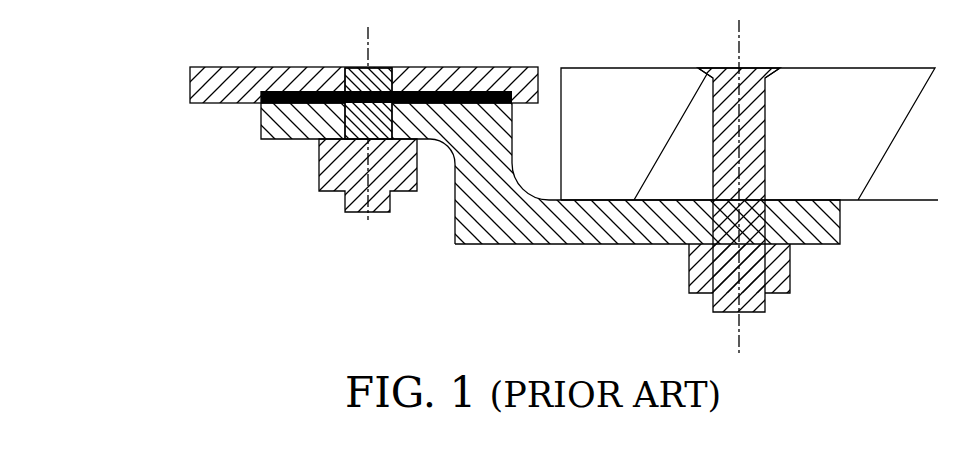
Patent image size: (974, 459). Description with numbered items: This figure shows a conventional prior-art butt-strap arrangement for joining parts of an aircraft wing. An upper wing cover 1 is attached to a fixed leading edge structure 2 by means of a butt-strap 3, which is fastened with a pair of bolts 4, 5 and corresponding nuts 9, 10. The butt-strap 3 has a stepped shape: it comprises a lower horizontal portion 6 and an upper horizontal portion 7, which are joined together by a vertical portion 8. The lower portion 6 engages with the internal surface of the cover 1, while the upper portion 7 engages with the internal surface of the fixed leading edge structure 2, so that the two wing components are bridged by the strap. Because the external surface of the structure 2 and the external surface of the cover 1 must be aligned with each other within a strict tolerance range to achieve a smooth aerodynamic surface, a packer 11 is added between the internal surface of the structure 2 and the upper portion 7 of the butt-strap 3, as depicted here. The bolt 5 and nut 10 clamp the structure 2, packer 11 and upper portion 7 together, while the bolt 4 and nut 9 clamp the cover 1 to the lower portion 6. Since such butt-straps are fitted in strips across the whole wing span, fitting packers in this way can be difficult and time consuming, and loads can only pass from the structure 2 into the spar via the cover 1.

The upper wing cover 1 is at (845, 73).
The fixed leading edge structure 2 is at (190, 85).
The butt-strap 3 is at (502, 266).
The bolt 4 is at (765, 130).
The bolt 5 is at (380, 70).
The lower horizontal portion 6 is at (840, 223).
The upper horizontal portion 7 is at (261, 117).
The vertical portion 8 is at (455, 183).
The nut 9 is at (790, 270).
The nut 10 is at (319, 167).
The packer 11 is at (267, 89).